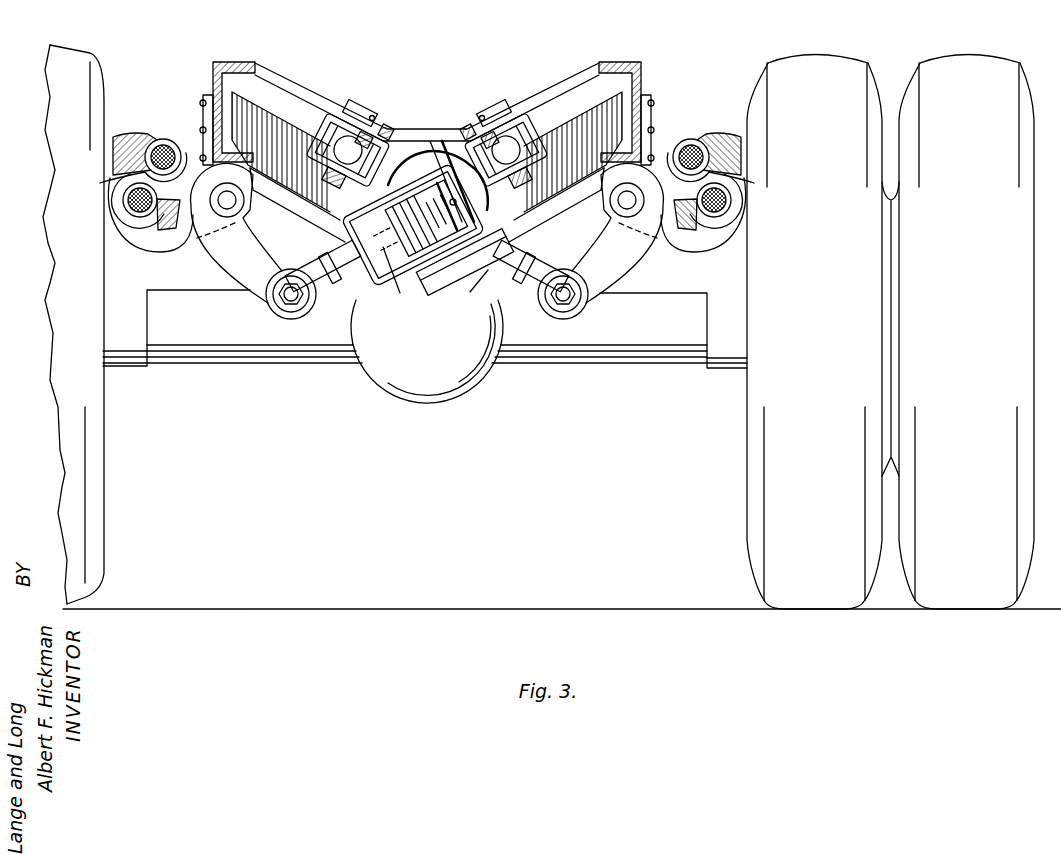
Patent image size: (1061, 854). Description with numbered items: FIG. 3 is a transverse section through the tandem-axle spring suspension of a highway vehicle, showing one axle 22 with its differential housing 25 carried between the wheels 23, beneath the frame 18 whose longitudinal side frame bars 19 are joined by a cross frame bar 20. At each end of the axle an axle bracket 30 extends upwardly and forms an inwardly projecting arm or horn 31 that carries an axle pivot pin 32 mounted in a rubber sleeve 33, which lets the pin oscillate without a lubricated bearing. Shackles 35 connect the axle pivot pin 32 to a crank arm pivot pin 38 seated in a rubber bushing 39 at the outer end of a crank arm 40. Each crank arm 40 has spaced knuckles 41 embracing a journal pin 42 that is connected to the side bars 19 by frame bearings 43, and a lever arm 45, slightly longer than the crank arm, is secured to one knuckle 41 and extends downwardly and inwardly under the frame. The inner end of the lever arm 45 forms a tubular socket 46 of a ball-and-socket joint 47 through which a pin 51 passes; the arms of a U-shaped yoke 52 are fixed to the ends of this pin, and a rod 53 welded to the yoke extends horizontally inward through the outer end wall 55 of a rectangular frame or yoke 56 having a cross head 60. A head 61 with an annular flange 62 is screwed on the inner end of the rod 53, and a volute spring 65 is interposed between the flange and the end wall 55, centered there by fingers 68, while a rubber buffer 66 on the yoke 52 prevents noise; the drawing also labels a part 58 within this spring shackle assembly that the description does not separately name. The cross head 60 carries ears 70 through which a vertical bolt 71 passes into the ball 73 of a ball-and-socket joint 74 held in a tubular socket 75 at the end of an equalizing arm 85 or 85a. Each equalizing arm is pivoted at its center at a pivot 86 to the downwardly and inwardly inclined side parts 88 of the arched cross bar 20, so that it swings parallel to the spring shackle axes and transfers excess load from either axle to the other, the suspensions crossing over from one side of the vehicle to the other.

The frame 18 is at (618, 62).
The longitudinal side frame bars 19 is at (243, 62).
The cross frame bar 20 is at (574, 84).
The axle 22 is at (205, 352).
The wheels 23 is at (100, 533).
The differential housing 25 is at (425, 397).
The axle bracket 30 is at (110, 168).
The arm or horn 31 is at (133, 140).
The axle pivot pin 32 is at (163, 137).
The rubber sleeve 33 is at (178, 138).
The shackle 35 is at (110, 182).
The crank arm pivot pin 38 is at (123, 201).
The rubber bushing 39 is at (118, 215).
The crank arm 40 is at (178, 250).
The knuckles 41 is at (252, 212).
The journal pin 42 is at (225, 210).
The frame bearings 43 is at (255, 190).
The lever arm 45 is at (245, 280).
The tubular socket 46 is at (282, 294).
The ball-and-socket joint 47 is at (612, 307).
The pin 51 is at (300, 305).
The U-shaped yoke 52 is at (558, 305).
The rod 53 is at (340, 263).
The outer end wall 55 is at (470, 292).
The rectangular frame or yoke 56 is at (397, 294).
The tube 58 is at (423, 276).
The cross head 60 is at (460, 150).
The head 61 is at (452, 150).
The annular flange 62 is at (430, 150).
The volute spring 65 is at (412, 224).
The rubber buffer 66 is at (540, 264).
The fingers 68 is at (352, 290).
The ears 70 is at (375, 112).
The vertical bolt 71 is at (488, 112).
The ball 73 is at (340, 150).
The ball-and-socket joint 74 is at (328, 128).
The tubular socket 75 is at (510, 163).
The equalizing arm 85 is at (646, 128).
The equalizing arm 85a is at (270, 140).
The pivot 86 is at (366, 103).
The inclined side parts 88 is at (300, 86).